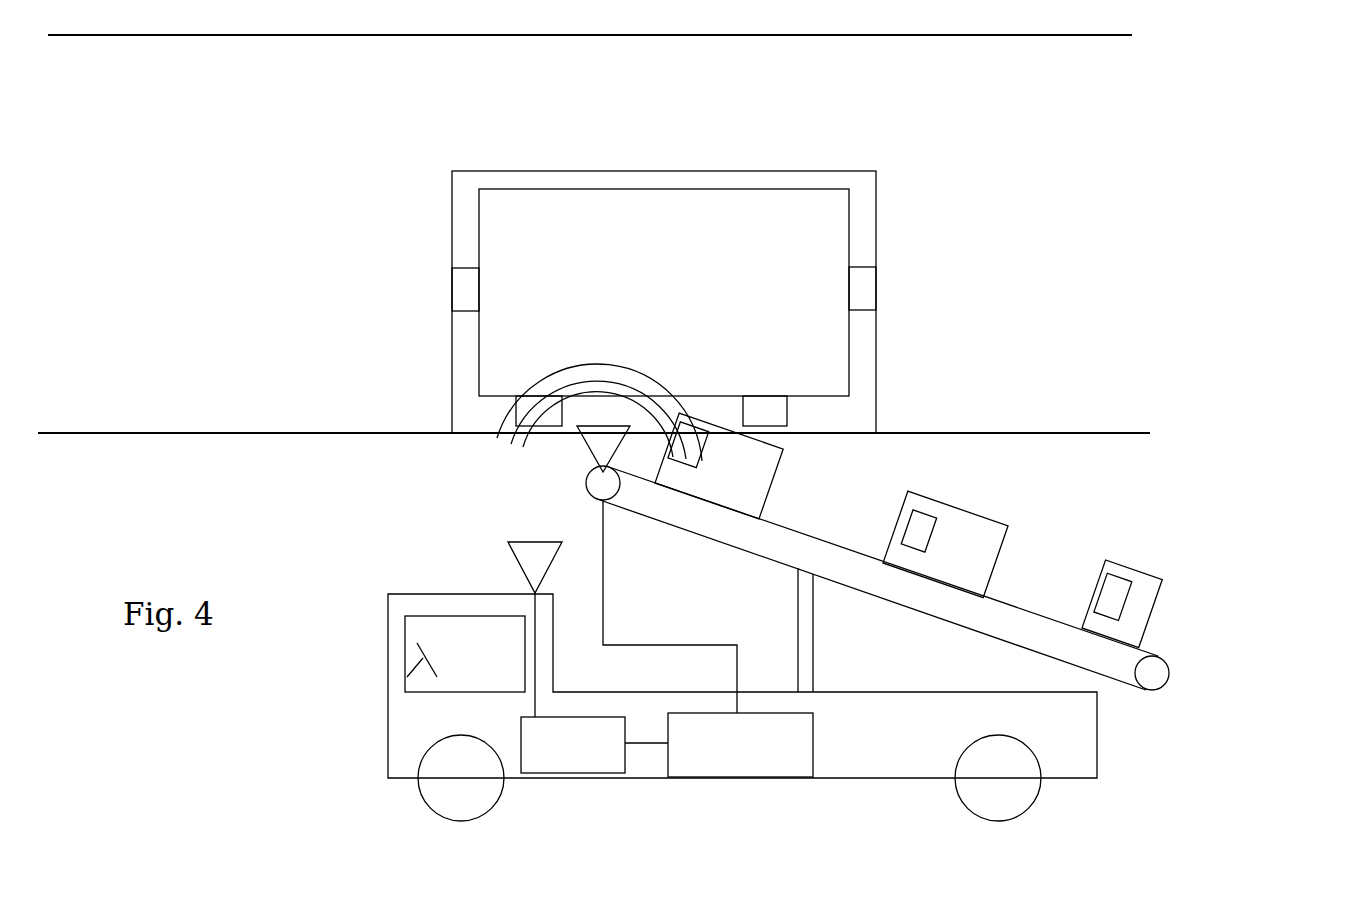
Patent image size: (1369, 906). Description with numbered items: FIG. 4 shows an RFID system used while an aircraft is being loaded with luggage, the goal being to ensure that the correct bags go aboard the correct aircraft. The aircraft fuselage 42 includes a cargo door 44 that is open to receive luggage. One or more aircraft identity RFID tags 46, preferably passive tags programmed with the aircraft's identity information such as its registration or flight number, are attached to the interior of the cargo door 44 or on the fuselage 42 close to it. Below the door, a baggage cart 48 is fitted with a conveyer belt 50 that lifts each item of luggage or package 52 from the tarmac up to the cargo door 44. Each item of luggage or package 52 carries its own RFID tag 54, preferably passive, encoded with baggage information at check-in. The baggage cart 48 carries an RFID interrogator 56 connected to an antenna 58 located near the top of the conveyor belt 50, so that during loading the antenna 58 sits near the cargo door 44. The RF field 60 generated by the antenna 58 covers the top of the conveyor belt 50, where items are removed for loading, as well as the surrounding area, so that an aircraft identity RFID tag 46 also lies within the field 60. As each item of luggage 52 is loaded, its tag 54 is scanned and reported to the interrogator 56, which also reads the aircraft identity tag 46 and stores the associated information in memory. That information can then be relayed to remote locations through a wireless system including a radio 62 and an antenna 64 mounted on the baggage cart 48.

The aircraft fuselage 42 is at (594, 234).
The cargo door 44 is at (877, 190).
The aircraft identity RFID tag 46 is at (918, 294).
The baggage cart 48 is at (742, 707).
The conveyer belt 50 is at (1162, 673).
The luggage/package 52 is at (1005, 523).
The RFID tag 54 is at (922, 522).
The RFID interrogator 56 is at (708, 638).
The antenna 58 is at (590, 457).
The RF field 60 is at (617, 343).
The radio 62 is at (594, 745).
The antenna 64 is at (523, 572).